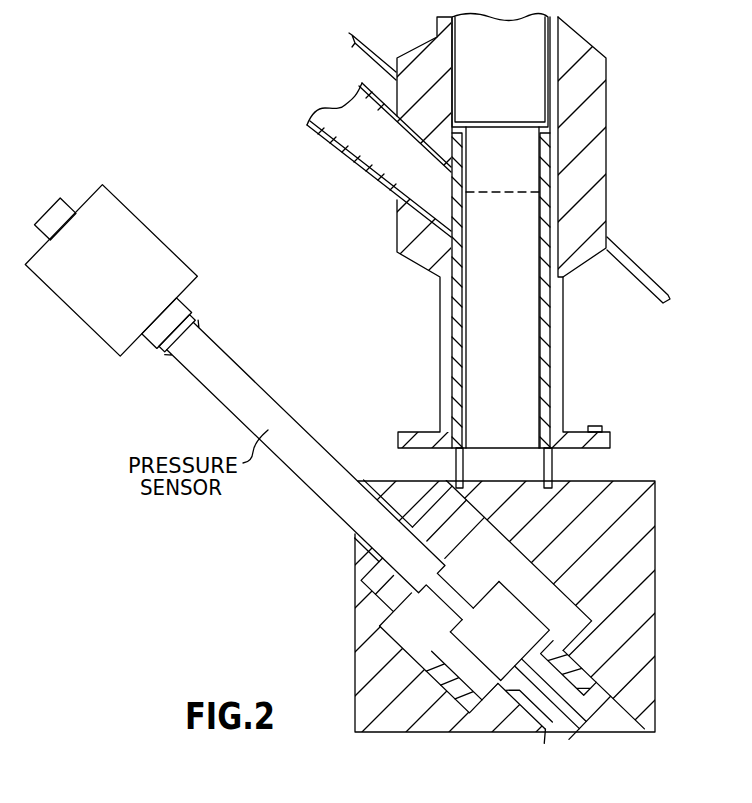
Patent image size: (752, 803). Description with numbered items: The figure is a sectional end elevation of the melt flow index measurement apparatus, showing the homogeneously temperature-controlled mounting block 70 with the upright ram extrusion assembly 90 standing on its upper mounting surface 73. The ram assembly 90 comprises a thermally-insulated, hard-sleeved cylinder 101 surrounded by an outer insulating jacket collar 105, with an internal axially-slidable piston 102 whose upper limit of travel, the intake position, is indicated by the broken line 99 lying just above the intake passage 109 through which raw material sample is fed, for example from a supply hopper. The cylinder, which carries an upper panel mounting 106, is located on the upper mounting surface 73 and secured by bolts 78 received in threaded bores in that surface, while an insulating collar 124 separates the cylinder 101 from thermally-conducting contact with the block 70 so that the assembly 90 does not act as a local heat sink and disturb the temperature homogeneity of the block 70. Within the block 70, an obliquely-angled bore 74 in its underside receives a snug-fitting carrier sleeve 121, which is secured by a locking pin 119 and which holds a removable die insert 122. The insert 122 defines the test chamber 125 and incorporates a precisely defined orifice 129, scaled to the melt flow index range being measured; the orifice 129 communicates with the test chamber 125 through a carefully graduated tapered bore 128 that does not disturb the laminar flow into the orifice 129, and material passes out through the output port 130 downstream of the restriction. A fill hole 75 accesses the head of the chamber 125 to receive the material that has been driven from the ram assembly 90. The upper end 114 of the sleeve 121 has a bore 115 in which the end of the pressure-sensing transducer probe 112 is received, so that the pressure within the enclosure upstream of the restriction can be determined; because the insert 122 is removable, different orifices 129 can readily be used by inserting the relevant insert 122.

The mounting block 70 is at (562, 573).
The upper mounting surface 73 is at (628, 483).
The obliquely-angled bore 74 is at (630, 712).
The fill hole 75 is at (470, 633).
The bolts 78 is at (600, 428).
The ram extrusion assembly 90 is at (607, 110).
The broken line 99 is at (528, 188).
The cylinder 101 is at (547, 350).
The piston 102 is at (532, 400).
The insulating jacket collar 105 is at (602, 213).
The upper panel mounting 106 is at (665, 285).
The intake passage 109 is at (355, 138).
The pressure-sensing transducer probe 112 is at (238, 398).
The upper end of the sleeve 114 is at (415, 600).
The bore 115 is at (412, 627).
The locking pin 119 is at (453, 672).
The carrier sleeve 121 is at (555, 648).
The die insert 122 is at (580, 670).
The insulating collar 124 is at (458, 472).
The test chamber 125 is at (505, 647).
The tapered bore 128 is at (468, 703).
The orifice 129 is at (533, 690).
The output port 130 is at (575, 713).